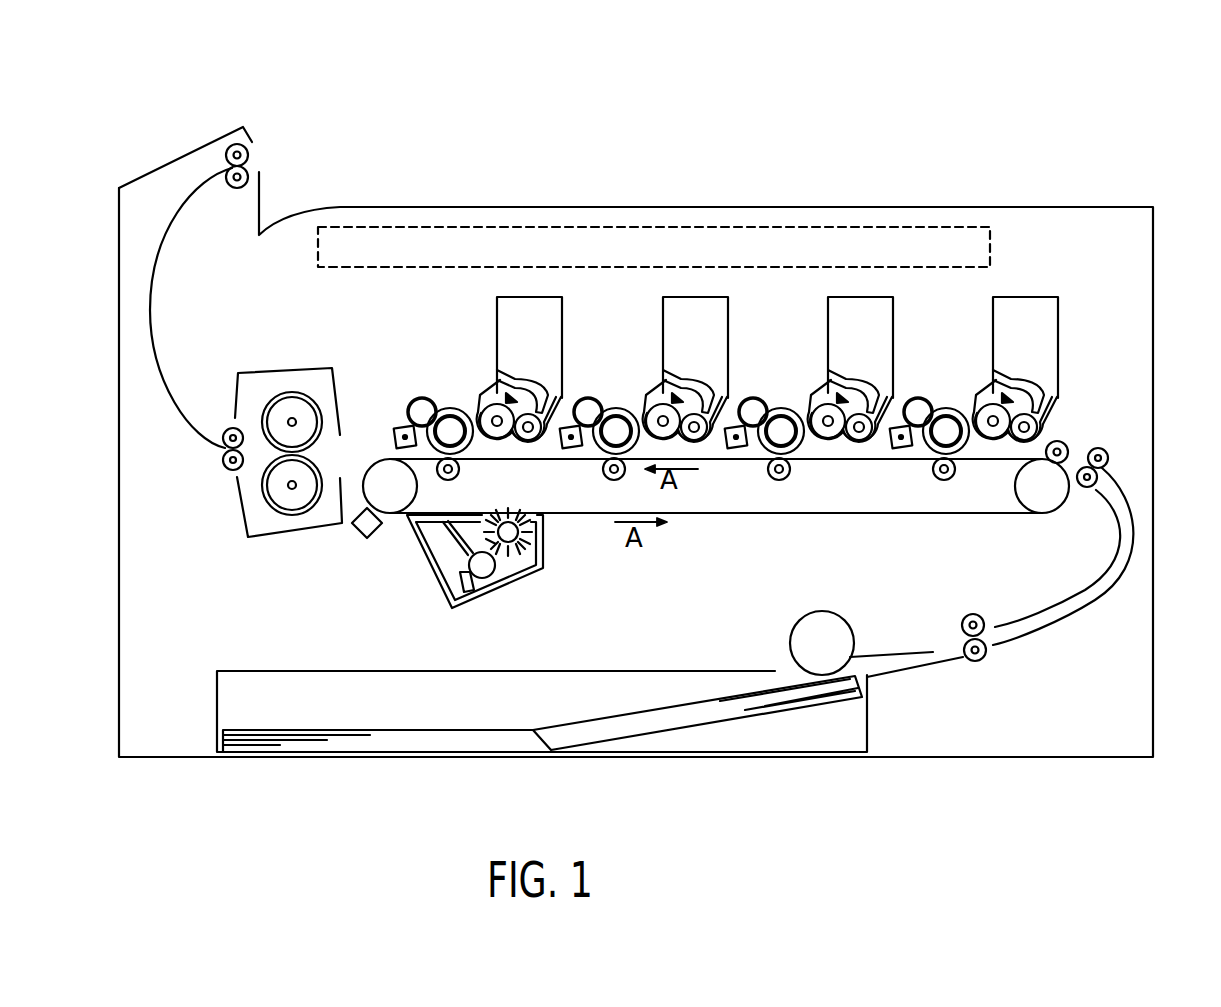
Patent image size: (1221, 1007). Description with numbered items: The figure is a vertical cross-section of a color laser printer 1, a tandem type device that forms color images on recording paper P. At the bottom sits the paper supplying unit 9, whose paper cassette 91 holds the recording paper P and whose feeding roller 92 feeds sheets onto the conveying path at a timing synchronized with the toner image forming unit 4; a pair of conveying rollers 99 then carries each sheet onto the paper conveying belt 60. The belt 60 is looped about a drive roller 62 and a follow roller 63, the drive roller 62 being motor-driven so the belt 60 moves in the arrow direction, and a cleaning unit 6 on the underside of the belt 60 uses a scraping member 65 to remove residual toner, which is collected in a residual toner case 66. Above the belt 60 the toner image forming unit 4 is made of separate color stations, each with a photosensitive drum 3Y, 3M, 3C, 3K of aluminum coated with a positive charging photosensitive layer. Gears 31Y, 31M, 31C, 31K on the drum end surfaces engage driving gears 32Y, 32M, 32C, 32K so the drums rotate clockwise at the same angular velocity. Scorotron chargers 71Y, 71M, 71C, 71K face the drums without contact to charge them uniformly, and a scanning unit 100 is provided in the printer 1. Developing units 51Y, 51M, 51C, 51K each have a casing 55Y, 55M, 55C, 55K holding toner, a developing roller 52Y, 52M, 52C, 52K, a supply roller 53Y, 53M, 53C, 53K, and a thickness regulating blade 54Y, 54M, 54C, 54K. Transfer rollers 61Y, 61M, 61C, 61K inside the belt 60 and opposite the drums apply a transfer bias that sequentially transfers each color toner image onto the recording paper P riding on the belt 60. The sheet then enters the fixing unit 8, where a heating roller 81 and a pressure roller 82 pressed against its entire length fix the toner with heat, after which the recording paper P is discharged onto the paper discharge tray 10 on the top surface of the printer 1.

The color laser printer 1 is at (707, 103).
The paper discharge tray 10 is at (310, 188).
The scanning unit 100 is at (990, 256).
The toner image forming unit 4 is at (1073, 313).
The fixing unit 8 is at (263, 429).
The heating roller 81 is at (273, 415).
The pressure roller 82 is at (273, 478).
The pair of conveying rollers 99 is at (1097, 448).
The paper conveying belt 60 is at (721, 517).
The drive roller 62 is at (392, 512).
The follow roller 63 is at (1043, 498).
The cleaning unit 6 is at (462, 578).
The scraping member 65 is at (512, 560).
The residual toner case 66 is at (440, 558).
The paper supplying unit 9 is at (542, 722).
The recording paper P is at (450, 733).
The paper cassette 91 is at (608, 692).
The feeding roller 92 is at (788, 643).
The developing unit 51K is at (463, 432).
The developing unit 51C is at (639, 423).
The developing unit 51M is at (805, 413).
The developing unit 51Y is at (1001, 412).
The casing 55K is at (514, 283).
The casing 55C is at (697, 334).
The casing 55M is at (864, 334).
The casing 55Y is at (1026, 334).
The developing roller 52K is at (483, 397).
The developing roller 52C is at (651, 390).
The developing roller 52M is at (822, 392).
The developing roller 52Y is at (981, 392).
The thickness regulating blade 54K is at (498, 404).
The thickness regulating blade 54C is at (645, 376).
The thickness regulating blade 54M is at (807, 377).
The thickness regulating blade 54Y is at (972, 379).
The supply roller 53K is at (532, 450).
The supply roller 53C is at (685, 495).
The supply roller 53M is at (831, 485).
The supply roller 53Y is at (1070, 402).
The photosensitive drum 3K is at (452, 408).
The photosensitive drum 3C is at (616, 409).
The photosensitive drum 3M is at (781, 410).
The photosensitive drum 3Y is at (946, 410).
The gear 32K is at (401, 404).
The gear 32C is at (574, 443).
The gear 32M is at (738, 444).
The gear 32Y is at (902, 443).
The charger 71K is at (393, 427).
The charger 71C is at (587, 370).
The charger 71M is at (758, 371).
The charger 71Y is at (922, 371).
The gear 31K is at (461, 465).
The gear 31C is at (634, 484).
The gear 31M is at (800, 484).
The gear 31Y is at (963, 485).
The transfer roller 61K is at (442, 475).
The transfer roller 61C is at (587, 517).
The transfer roller 61M is at (753, 517).
The transfer roller 61Y is at (929, 518).